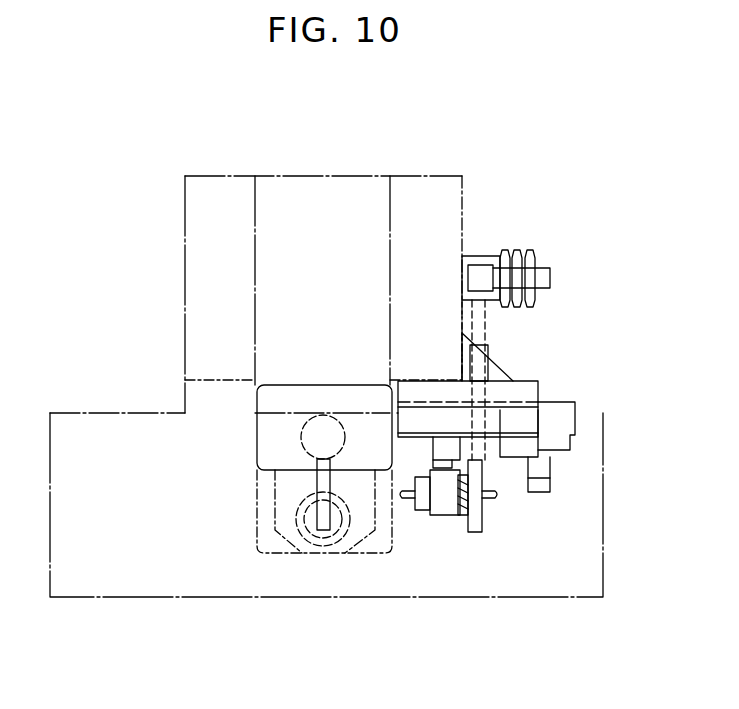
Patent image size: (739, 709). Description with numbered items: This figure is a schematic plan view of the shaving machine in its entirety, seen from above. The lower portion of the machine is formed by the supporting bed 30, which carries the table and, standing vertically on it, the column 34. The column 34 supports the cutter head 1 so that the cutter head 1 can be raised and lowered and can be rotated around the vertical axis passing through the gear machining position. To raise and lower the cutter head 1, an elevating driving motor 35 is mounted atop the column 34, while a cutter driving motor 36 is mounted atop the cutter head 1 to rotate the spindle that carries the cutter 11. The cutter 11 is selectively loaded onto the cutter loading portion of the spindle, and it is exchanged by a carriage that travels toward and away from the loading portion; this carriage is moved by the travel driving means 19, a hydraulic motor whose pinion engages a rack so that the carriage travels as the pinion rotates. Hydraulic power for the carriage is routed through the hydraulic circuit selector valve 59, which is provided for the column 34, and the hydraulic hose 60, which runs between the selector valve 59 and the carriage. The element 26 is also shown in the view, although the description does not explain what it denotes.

The cutter head 1 is at (275, 437).
The cutter 11 is at (322, 482).
The travel driving means 19 is at (543, 470).
The motor 26 is at (421, 500).
The supporting bed 30 is at (103, 433).
The column 34 is at (333, 215).
The elevating driving motor 35 is at (323, 430).
The cutter driving motor 36 is at (313, 540).
The hydraulic circuit selector valve 59 is at (547, 256).
The hydraulic hose 60 is at (478, 330).